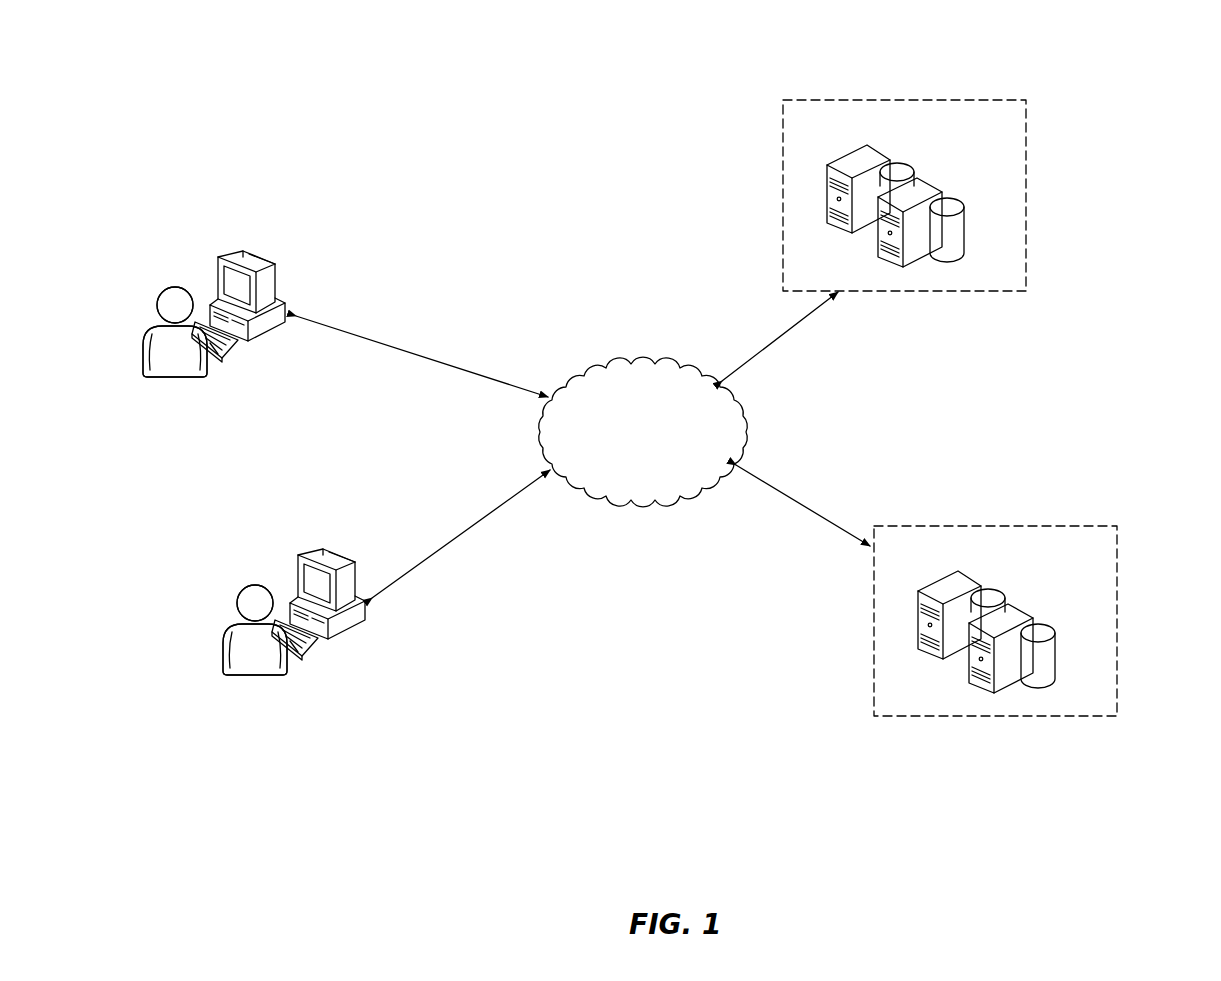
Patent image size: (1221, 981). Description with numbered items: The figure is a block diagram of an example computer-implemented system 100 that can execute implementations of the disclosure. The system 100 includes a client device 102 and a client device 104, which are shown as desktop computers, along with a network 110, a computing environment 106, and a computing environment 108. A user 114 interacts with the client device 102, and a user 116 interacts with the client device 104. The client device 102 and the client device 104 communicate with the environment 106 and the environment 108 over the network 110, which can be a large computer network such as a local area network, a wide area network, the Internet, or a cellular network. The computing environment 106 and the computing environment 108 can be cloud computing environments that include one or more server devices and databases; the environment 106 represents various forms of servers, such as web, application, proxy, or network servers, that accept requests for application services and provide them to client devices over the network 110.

The computer-implemented system 100 is at (228, 76).
The client device 102 is at (221, 254).
The client device 104 is at (301, 552).
The computing environment 106 is at (948, 195).
The computing environment 108 is at (1039, 621).
The network 110 is at (642, 362).
The user 114 is at (172, 378).
The user 116 is at (252, 676).